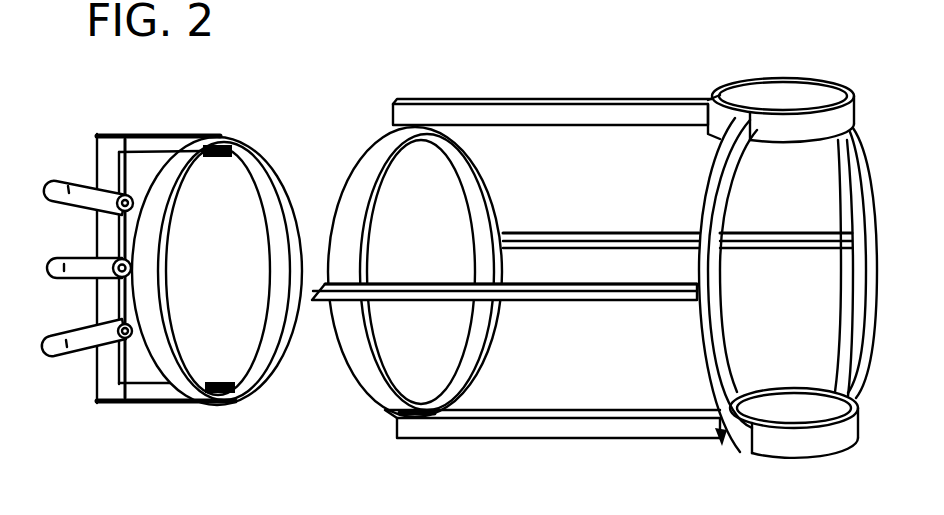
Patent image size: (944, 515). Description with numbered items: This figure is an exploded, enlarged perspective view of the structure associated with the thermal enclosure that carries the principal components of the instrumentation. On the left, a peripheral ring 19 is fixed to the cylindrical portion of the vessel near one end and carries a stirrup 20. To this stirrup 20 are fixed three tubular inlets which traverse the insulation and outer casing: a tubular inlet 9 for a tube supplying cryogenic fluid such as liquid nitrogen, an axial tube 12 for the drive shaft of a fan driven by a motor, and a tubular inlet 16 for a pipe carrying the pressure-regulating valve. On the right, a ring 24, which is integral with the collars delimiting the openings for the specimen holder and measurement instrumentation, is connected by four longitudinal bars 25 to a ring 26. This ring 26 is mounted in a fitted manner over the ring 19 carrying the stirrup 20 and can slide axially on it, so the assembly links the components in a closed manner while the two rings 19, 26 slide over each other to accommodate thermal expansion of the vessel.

The tubular inlet 9 is at (65, 182).
The axial tube 12 is at (64, 262).
The tubular inlet 16 is at (68, 336).
The ring 19 is at (268, 158).
The stirrup 20 is at (138, 397).
The ring 24 is at (713, 355).
The longitudinal bars 25 is at (545, 293).
The ring 26 is at (370, 378).